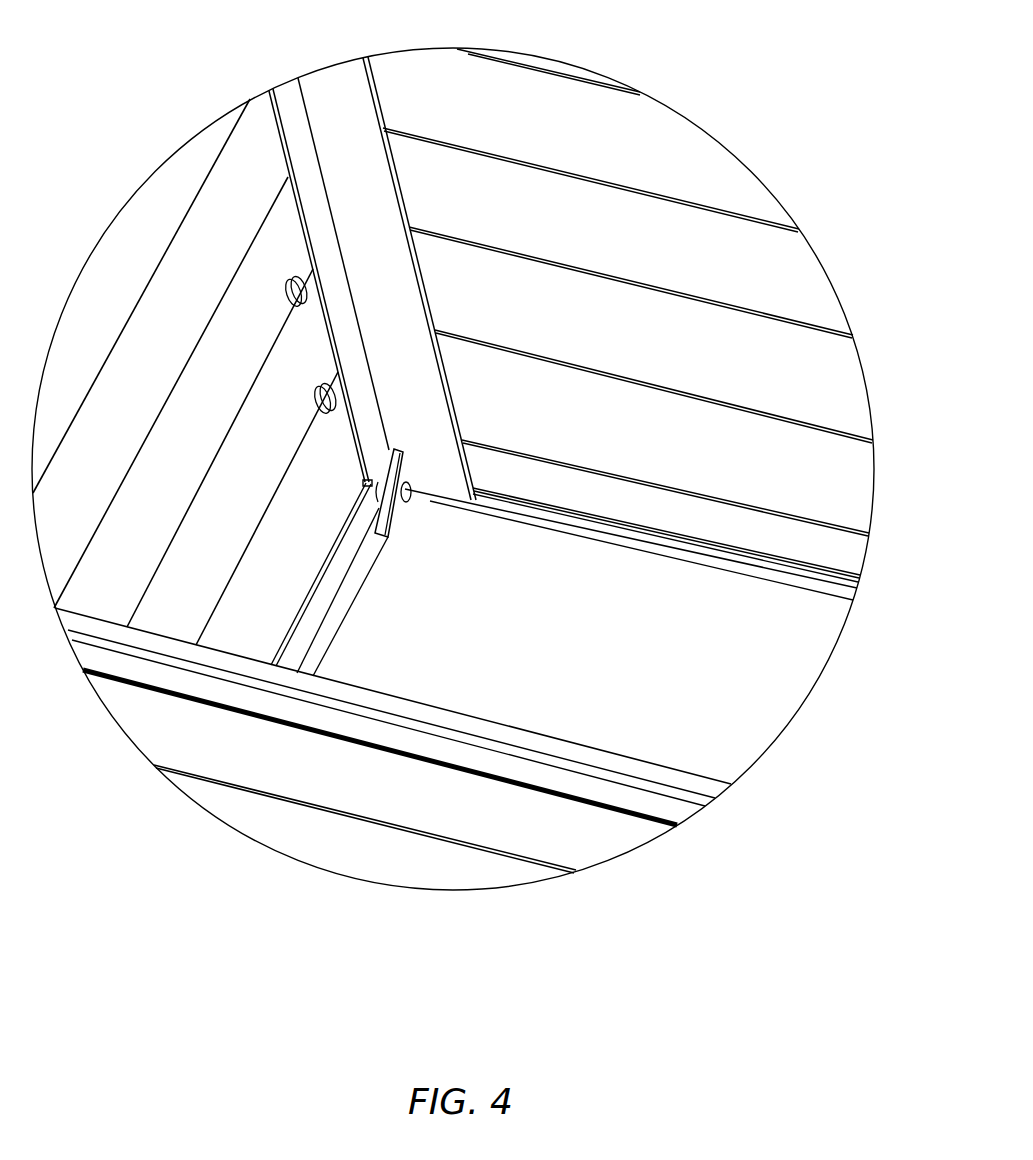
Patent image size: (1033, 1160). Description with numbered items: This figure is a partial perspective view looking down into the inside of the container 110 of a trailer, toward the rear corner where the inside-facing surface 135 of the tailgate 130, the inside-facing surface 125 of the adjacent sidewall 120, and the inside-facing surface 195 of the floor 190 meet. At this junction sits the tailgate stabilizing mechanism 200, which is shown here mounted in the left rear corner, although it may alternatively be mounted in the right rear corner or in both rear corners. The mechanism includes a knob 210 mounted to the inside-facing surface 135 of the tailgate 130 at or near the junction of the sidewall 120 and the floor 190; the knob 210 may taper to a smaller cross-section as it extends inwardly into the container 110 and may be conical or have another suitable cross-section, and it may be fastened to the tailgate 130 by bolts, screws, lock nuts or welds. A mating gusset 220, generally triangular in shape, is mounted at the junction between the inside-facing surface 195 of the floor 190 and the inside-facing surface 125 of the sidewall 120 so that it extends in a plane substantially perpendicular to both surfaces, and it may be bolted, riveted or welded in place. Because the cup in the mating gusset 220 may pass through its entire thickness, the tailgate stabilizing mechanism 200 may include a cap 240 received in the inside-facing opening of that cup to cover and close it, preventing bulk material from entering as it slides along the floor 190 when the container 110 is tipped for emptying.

The container 110 is at (409, 43).
The sidewall 120 is at (558, 90).
The inside-facing surface of the sidewall 125 is at (442, 491).
The tailgate 130 is at (197, 148).
The inside-facing surface of the tailgate 135 is at (300, 648).
The floor 190 is at (780, 711).
The inside-facing surface of the floor 195 is at (444, 590).
The tailgate stabilizing mechanism 200 is at (443, 408).
The knob 210 is at (364, 483).
The mating gusset 220 is at (383, 508).
The cap 240 is at (410, 483).